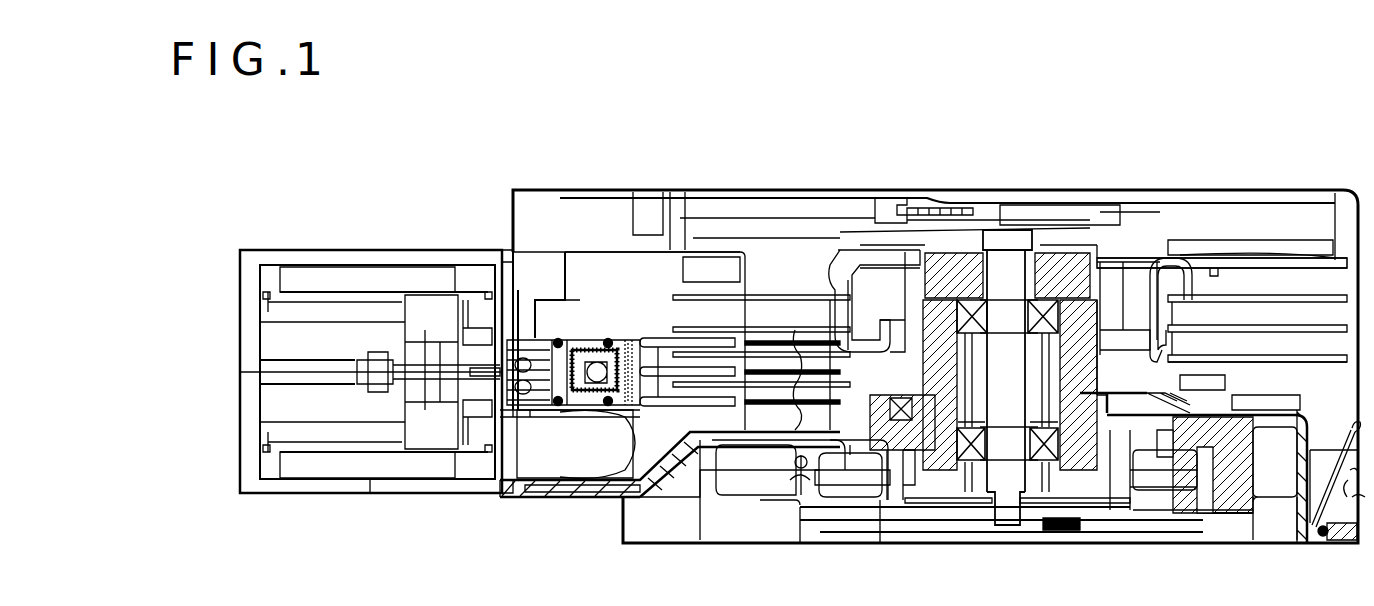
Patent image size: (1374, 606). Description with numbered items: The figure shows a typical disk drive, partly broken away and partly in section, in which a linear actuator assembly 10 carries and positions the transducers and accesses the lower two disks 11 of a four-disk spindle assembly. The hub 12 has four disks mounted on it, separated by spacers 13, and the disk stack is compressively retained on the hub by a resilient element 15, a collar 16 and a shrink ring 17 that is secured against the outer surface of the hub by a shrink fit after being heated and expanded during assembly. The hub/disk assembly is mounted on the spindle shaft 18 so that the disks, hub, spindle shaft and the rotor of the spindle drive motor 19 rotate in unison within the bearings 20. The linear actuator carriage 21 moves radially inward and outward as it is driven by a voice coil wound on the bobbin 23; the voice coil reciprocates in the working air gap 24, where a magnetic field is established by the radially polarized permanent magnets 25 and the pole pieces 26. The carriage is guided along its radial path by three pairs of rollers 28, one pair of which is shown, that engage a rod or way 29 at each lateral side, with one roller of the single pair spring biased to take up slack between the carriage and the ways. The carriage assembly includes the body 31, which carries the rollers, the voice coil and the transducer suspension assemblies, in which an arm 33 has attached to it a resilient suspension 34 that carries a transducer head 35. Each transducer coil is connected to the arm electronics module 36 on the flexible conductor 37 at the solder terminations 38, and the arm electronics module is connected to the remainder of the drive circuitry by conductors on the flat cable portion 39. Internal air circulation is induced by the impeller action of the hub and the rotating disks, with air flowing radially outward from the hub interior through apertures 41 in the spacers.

The actuator assembly 10 is at (413, 244).
The disks 11 is at (1300, 360).
The hub 12 is at (1185, 405).
The spacers 13 is at (1185, 371).
The resilient element 15 is at (1185, 281).
The collar 16 is at (1135, 325).
The shrink ring 17 is at (882, 325).
The spindle shaft 18 is at (1025, 368).
The spindle drive motor 19 is at (868, 500).
The bearings 20 is at (1006, 300).
The linear actuator carriage 21 is at (588, 333).
The bobbin 23 is at (427, 290).
The working air gap 24 is at (315, 297).
The permanent magnets 25 is at (355, 280).
The pole pieces 26 is at (370, 485).
The rollers 28 is at (524, 365).
The rod or way 29 is at (333, 358).
The body 31 is at (557, 338).
The arm 33 is at (678, 405).
The resilient suspension 34 is at (755, 392).
The transducer head 35 is at (792, 443).
The arm electronics module 36 is at (583, 405).
The flexible conductor 37 is at (604, 335).
The solder terminations 38 is at (603, 412).
The flat cable portion 39 is at (625, 497).
The apertures 41 is at (1180, 342).